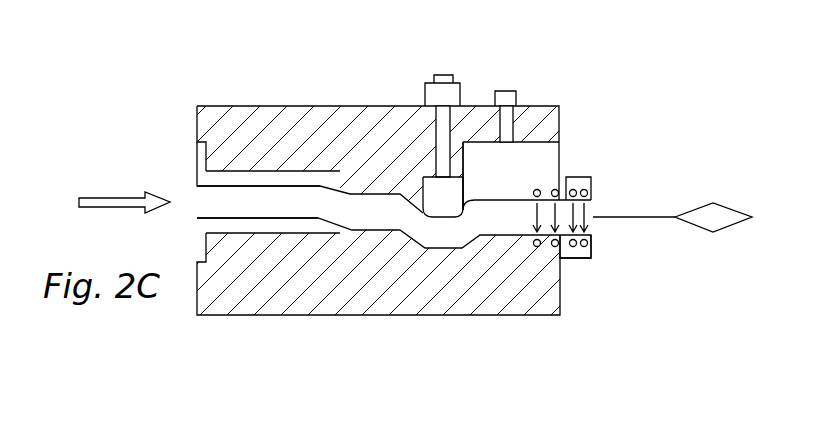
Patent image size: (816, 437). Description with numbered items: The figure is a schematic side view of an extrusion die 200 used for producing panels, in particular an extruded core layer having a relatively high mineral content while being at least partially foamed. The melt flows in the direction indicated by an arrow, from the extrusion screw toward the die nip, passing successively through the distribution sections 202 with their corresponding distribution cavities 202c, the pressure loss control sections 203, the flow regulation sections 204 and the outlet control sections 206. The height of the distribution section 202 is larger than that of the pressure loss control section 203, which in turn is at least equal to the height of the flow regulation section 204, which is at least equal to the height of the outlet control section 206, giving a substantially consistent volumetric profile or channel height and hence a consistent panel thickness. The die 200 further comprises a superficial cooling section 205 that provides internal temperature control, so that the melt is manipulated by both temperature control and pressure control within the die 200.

The die 200 is at (172, 90).
The distribution section 202 is at (328, 183).
The distribution cavity 202c is at (324, 232).
The pressure loss control section 203 is at (365, 213).
The flow regulation section 204 is at (445, 200).
The superficial cooling section 205 is at (556, 190).
The outlet control section 206 is at (533, 160).